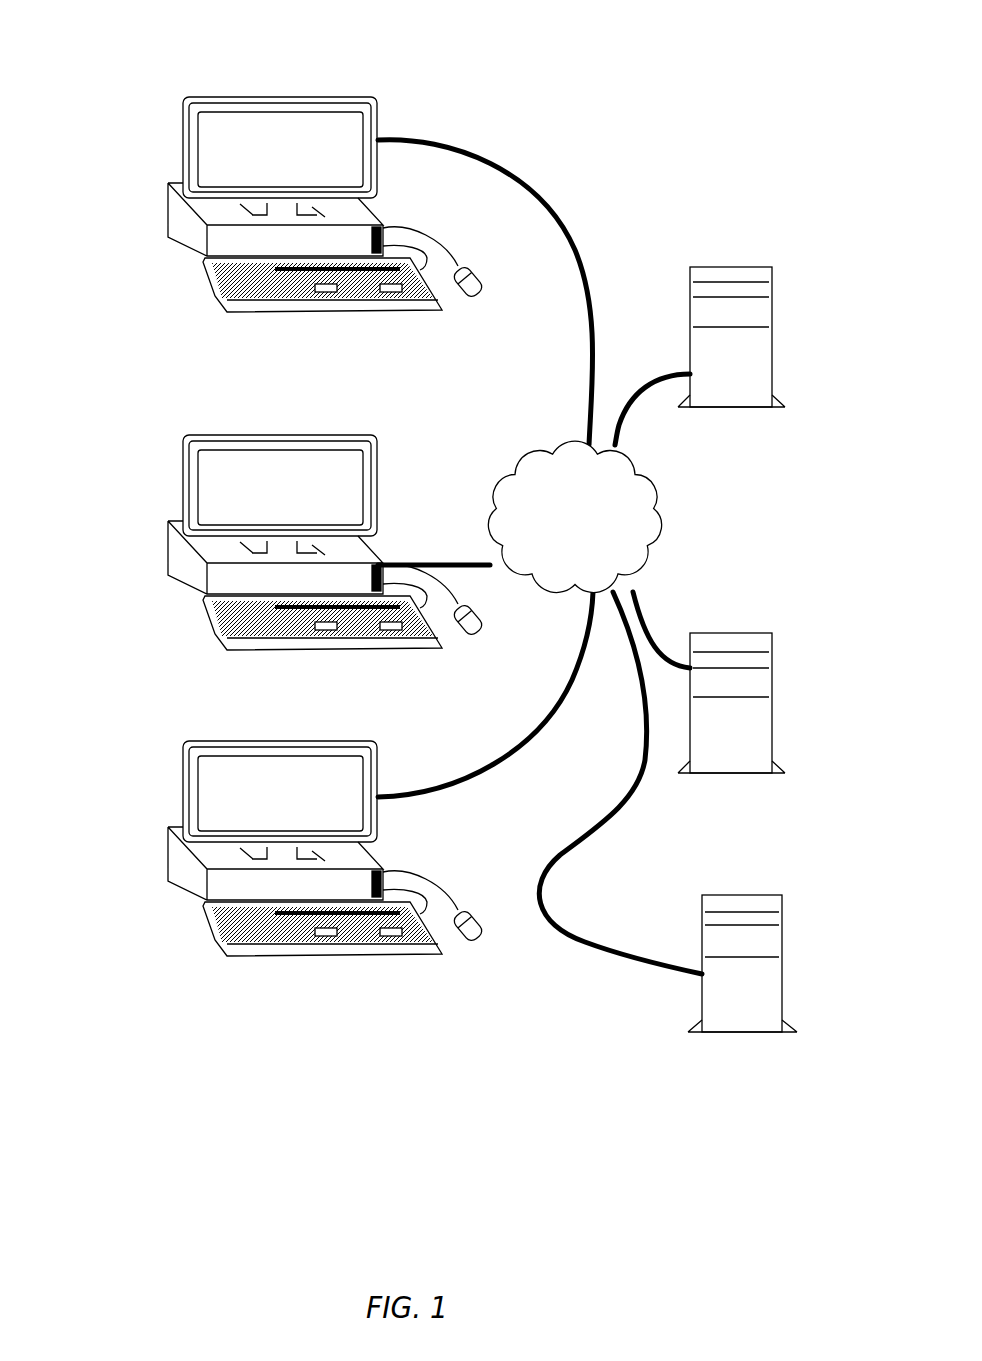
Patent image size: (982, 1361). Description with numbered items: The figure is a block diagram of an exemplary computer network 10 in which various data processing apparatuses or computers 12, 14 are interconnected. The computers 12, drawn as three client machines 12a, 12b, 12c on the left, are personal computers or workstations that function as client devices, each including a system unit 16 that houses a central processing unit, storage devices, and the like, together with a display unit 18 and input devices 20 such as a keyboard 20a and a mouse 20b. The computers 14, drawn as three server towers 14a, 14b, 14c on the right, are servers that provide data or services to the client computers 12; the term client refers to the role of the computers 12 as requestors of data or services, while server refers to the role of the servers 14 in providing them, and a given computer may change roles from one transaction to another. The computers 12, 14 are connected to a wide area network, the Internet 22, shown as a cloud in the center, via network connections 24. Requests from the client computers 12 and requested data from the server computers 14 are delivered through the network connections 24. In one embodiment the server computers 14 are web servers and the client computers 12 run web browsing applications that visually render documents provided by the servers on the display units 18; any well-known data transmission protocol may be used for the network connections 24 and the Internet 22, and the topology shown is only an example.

The computer network 10 is at (520, 76).
The computers 12 is at (78, 199).
The first client computer 12a is at (155, 200).
The second client computer 12b is at (155, 535).
The third client computer 12c is at (155, 842).
The computers 14 is at (780, 332).
The first server 14a is at (773, 280).
The second server 14b is at (775, 752).
The third server 14c is at (742, 963).
The system unit 16 is at (177, 248).
The display unit 18 is at (333, 133).
The input devices 20 is at (378, 298).
The keyboard 20a is at (250, 309).
The mouse 20b is at (482, 264).
The Internet 22 is at (587, 559).
The network connections 24 is at (542, 180).